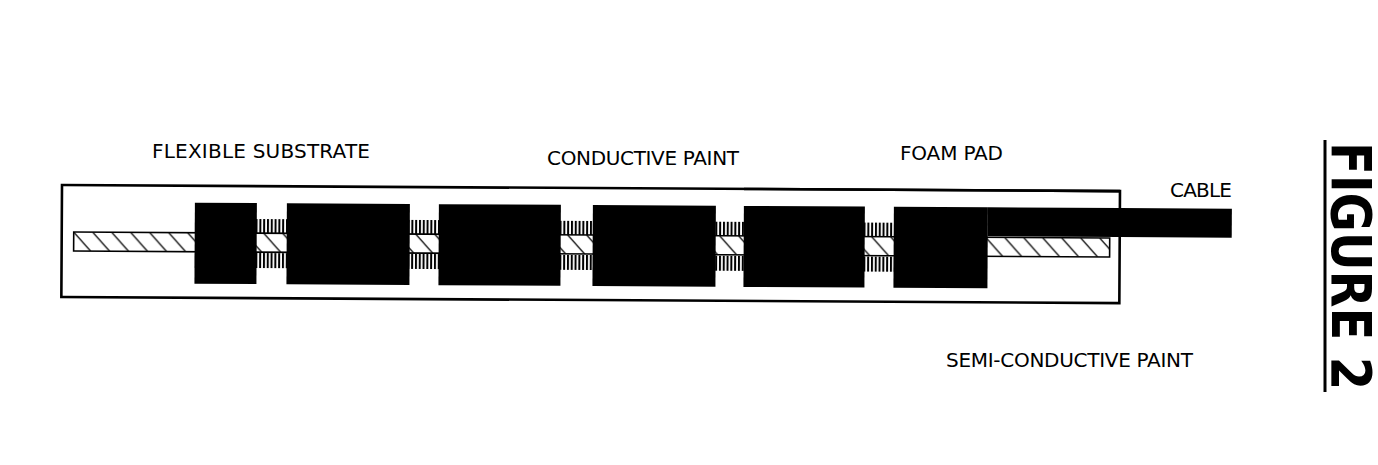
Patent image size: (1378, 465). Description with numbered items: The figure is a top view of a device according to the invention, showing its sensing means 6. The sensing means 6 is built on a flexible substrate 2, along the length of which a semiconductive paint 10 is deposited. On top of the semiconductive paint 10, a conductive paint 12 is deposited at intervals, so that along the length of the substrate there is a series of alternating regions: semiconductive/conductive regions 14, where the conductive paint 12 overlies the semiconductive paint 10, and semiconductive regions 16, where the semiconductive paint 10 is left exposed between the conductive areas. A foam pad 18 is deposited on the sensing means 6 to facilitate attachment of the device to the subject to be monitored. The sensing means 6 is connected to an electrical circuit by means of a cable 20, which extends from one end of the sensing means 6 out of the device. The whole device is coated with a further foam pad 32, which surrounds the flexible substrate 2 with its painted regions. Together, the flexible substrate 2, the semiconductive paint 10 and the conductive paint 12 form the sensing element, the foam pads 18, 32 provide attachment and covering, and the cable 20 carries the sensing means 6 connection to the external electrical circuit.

The flexible substrate 2 is at (825, 241).
The sensing means 6 is at (488, 186).
The semiconductive paint 10 is at (541, 284).
The conductive paint 12 is at (372, 284).
The semiconductive/conductive region 14 is at (657, 284).
The semiconductive region 16 is at (880, 275).
The foam pad 18 is at (1034, 204).
The cable 20 is at (1152, 209).
The foam pad 32 is at (872, 190).